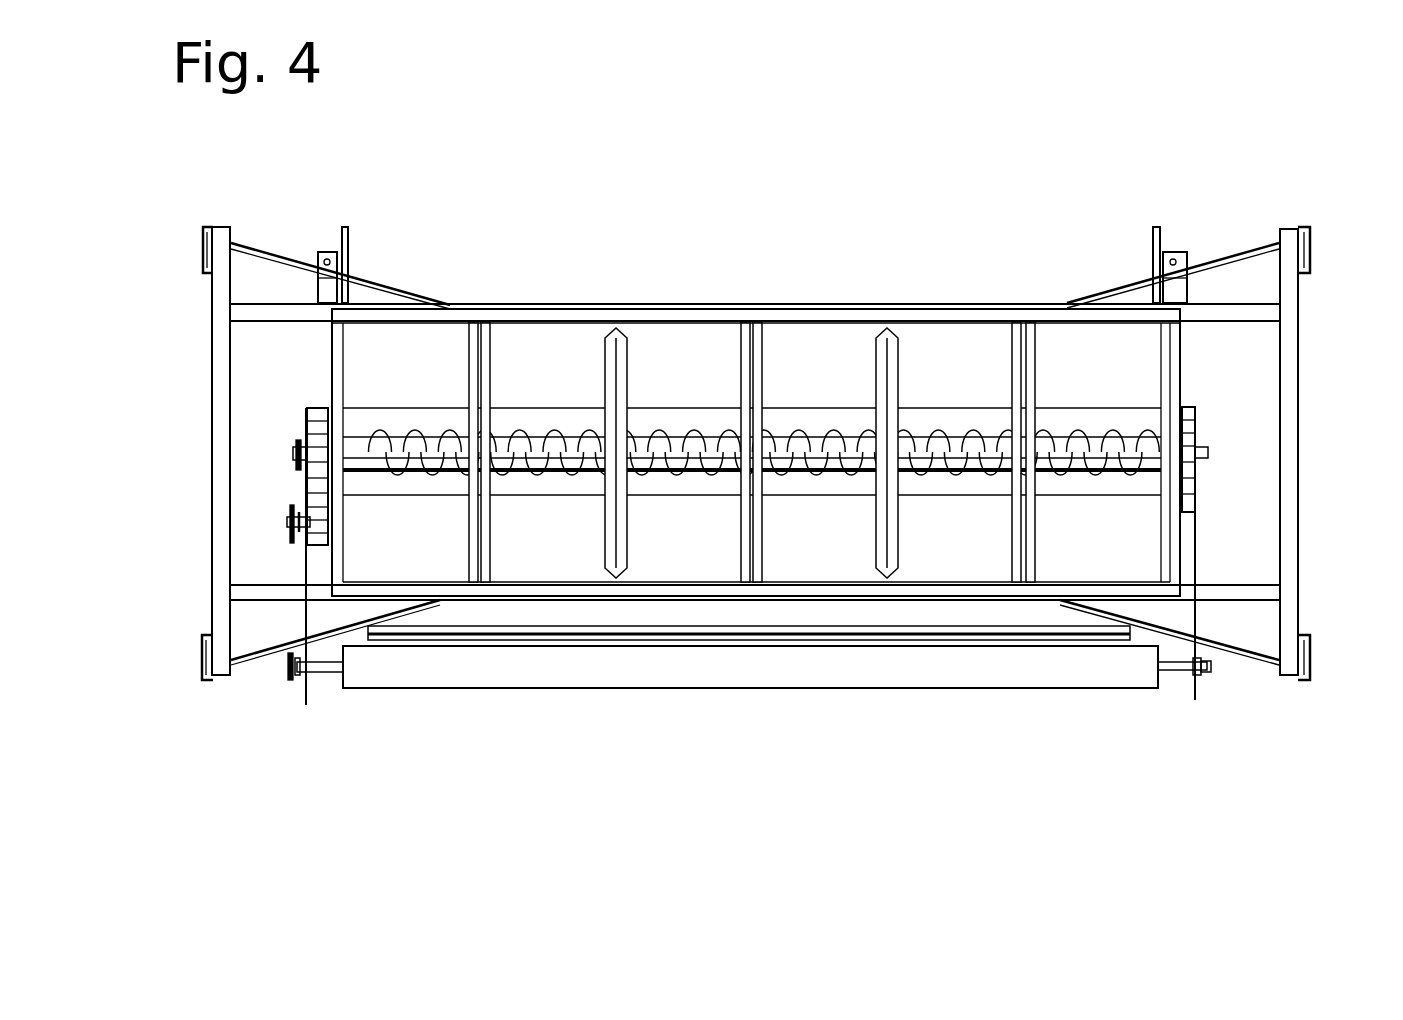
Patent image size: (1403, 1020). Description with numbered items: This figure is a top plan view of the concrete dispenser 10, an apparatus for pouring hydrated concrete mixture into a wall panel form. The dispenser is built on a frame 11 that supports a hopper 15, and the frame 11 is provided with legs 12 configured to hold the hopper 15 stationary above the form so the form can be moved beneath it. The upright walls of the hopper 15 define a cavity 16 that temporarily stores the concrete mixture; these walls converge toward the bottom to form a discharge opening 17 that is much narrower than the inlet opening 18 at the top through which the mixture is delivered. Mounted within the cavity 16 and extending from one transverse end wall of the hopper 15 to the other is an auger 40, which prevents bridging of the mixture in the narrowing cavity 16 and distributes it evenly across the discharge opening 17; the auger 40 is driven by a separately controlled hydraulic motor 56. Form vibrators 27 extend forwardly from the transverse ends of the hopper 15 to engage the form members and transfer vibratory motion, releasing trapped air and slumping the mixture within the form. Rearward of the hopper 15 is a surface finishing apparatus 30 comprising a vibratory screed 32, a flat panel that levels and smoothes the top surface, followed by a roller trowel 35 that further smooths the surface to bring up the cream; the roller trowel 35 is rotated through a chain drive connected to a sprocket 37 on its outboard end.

The concrete dispenser 10 is at (1124, 150).
The frame 11 is at (1288, 358).
The legs 12 is at (213, 227).
The hopper 15 is at (553, 303).
The cavity 16 is at (808, 372).
The discharge opening 17 is at (955, 505).
The inlet opening 18 is at (951, 330).
The form vibrators 27 is at (328, 252).
The surface finishing apparatus 30 is at (553, 738).
The vibratory screed 32 is at (720, 618).
The roller trowel 35 is at (902, 673).
The sprocket 37 is at (288, 668).
The auger 40 is at (678, 402).
The hydraulic motor 56 is at (307, 507).